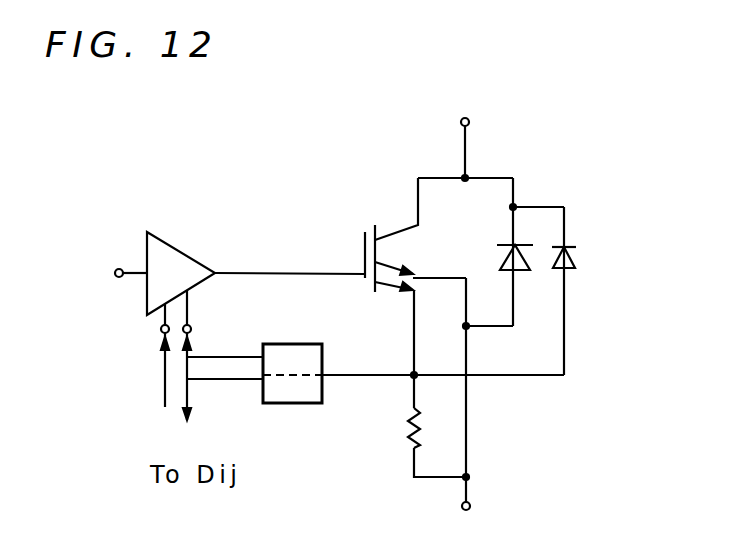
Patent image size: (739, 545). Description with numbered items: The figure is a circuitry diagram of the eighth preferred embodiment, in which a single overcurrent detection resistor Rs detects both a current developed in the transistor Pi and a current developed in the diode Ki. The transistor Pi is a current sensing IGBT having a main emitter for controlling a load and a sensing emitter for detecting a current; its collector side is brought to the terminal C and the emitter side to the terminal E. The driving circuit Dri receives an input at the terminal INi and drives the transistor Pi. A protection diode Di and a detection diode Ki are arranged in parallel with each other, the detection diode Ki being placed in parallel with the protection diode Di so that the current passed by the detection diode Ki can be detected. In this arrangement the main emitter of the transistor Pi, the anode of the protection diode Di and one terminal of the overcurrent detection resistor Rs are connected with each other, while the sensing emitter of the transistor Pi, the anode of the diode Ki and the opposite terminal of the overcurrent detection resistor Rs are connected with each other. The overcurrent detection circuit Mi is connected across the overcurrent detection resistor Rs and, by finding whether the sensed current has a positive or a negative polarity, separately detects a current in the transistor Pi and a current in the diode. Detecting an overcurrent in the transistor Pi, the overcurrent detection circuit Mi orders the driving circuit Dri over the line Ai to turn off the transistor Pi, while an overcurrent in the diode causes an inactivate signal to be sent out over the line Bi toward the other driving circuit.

The input terminal INi is at (99, 273).
The driving circuit Dri is at (163, 242).
The current sensing IGBT Pi is at (376, 215).
The collector terminal C is at (463, 132).
The emitter terminal E is at (476, 507).
The overcurrent detection resistor Rs is at (405, 425).
The protection diode Di is at (518, 240).
The detection diode Ki is at (575, 240).
The overcurrent detection circuit Mi is at (282, 403).
The drive signal line Ai is at (160, 330).
The detection signal line Bi is at (193, 329).